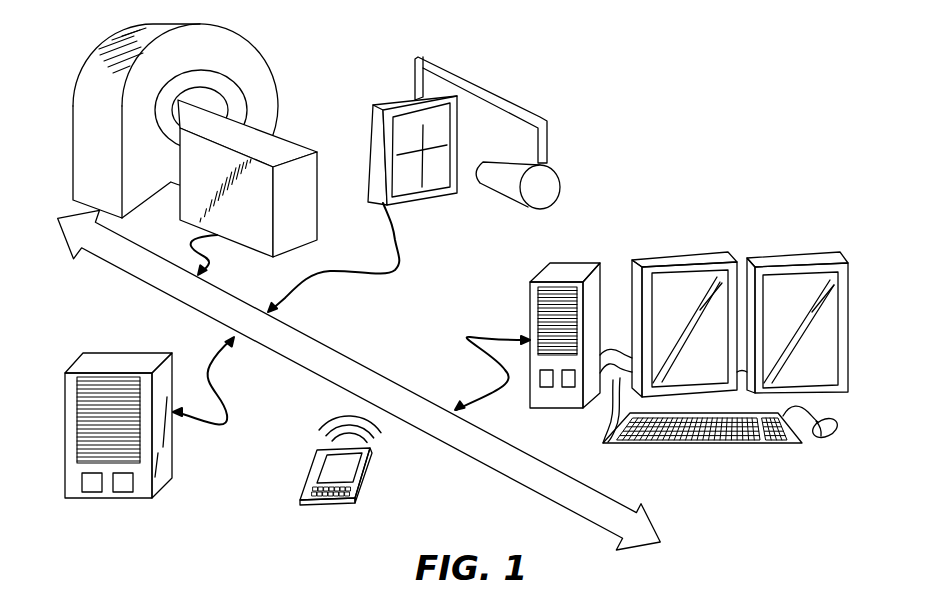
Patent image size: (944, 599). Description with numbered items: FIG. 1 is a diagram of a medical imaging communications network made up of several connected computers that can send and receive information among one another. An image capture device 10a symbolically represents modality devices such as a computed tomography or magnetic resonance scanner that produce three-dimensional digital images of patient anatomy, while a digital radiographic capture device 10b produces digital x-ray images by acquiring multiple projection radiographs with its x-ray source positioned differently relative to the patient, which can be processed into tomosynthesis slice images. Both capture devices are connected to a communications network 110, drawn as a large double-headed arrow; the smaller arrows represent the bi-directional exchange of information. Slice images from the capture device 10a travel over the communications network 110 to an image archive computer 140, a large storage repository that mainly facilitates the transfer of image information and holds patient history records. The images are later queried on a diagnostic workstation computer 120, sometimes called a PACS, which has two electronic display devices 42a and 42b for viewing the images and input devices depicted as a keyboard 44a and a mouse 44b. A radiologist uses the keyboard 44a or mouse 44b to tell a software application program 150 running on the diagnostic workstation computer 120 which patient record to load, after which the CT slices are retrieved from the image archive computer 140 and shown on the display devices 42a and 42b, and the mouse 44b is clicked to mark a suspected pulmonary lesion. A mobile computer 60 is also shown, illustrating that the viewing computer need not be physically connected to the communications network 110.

The image capture device 10a is at (260, 58).
The digital radiographic (DR) capture device 10b is at (465, 78).
The communications network 110 is at (518, 480).
The diagnostic workstation computer 120 is at (529, 280).
The software application program 150 is at (568, 273).
The electronic display device 42a is at (683, 252).
The electronic display device 42b is at (812, 253).
The keyboard 44a is at (745, 445).
The mouse 44b is at (838, 418).
The image archive computer 140 is at (63, 458).
The mobile computer 60 is at (302, 493).